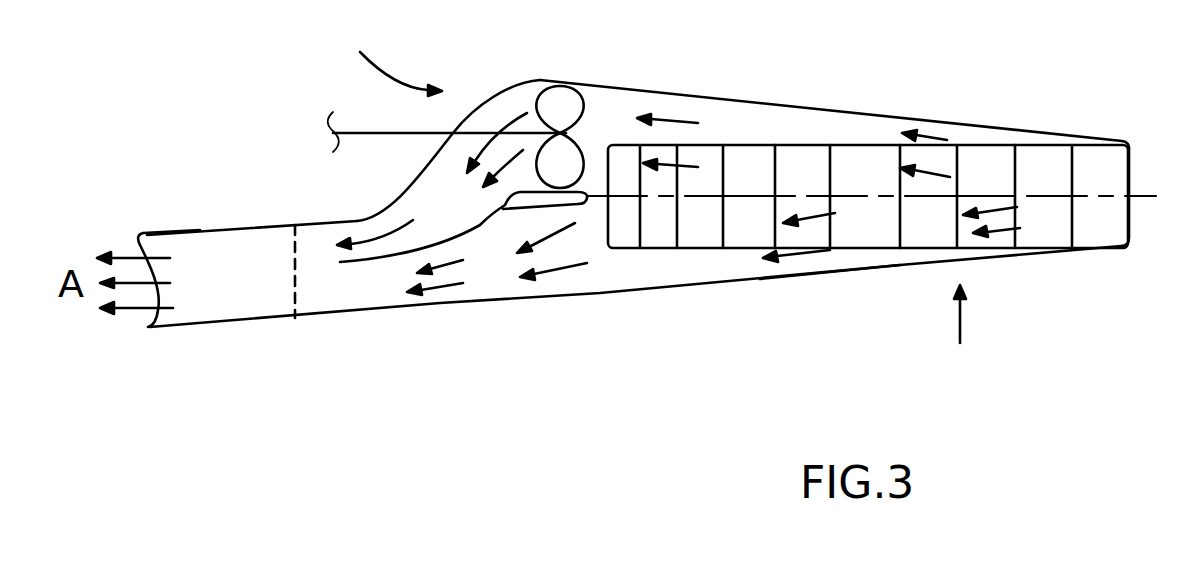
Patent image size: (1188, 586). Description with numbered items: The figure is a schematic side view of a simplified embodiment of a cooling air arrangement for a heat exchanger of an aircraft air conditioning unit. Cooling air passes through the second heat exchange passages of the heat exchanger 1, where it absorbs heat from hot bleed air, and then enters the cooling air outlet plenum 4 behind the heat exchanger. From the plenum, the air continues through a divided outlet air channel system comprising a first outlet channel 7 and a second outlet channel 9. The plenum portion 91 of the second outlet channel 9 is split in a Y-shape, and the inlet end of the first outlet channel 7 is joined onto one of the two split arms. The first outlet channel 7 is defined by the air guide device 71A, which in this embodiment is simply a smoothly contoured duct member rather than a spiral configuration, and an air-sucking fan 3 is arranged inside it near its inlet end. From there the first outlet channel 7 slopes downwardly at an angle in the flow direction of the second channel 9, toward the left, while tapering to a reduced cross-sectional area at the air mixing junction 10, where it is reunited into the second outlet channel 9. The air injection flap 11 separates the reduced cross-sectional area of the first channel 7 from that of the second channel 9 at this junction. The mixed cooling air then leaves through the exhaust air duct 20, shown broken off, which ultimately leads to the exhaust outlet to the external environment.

The heat exchanger 1 is at (1112, 170).
The fan 3 is at (593, 90).
The cooling air outlet plenum 4 is at (957, 340).
The first outlet channel 7 is at (497, 95).
The second outlet channel 9 is at (791, 123).
The air mixing junction 10 is at (320, 293).
The air injection flap 11 is at (383, 262).
The exhaust air duct 20 is at (147, 240).
The air guide device 71A is at (426, 94).
The plenum portion 91 is at (814, 301).